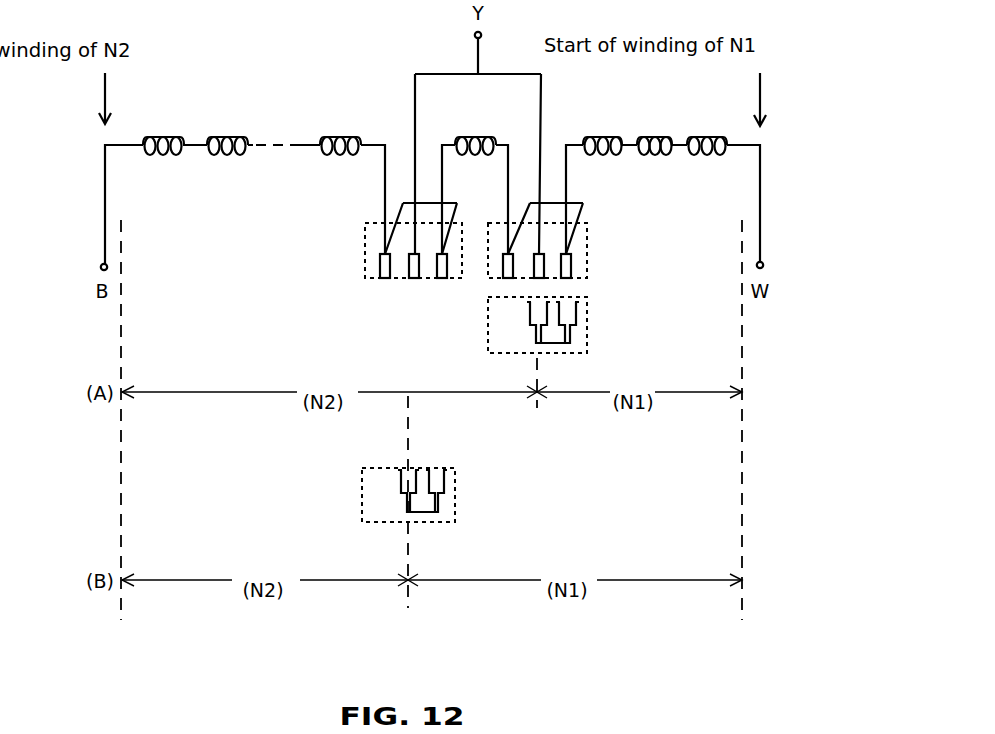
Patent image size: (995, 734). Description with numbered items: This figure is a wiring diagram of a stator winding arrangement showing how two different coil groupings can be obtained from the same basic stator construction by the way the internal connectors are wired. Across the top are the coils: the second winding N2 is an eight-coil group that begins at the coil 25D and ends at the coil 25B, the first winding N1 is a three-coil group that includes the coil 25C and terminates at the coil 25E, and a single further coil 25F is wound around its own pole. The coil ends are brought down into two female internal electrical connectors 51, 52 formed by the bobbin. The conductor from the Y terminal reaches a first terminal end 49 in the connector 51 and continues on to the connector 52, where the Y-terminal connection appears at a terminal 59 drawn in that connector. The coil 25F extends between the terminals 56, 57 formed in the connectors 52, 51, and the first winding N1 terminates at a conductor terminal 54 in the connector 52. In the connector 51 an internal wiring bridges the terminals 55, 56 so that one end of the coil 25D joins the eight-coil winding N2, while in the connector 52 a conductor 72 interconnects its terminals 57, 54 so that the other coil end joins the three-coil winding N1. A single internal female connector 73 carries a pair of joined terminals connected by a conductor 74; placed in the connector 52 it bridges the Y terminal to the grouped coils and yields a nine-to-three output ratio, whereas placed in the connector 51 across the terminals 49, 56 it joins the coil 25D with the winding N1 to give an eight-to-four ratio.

The coil 25B is at (168, 136).
The coil 25C is at (692, 136).
The coil 25D is at (350, 136).
The coil 25E is at (606, 136).
The coil 25F is at (478, 136).
The first terminal end 49 is at (408, 278).
The internal electrical connector 51 is at (365, 247).
The internal electrical connector 52 is at (593, 255).
The conductor terminal 54 is at (572, 278).
The terminal 55 is at (379, 277).
The terminal 56 is at (437, 282).
The terminal 57 is at (500, 277).
The terminal 59 is at (532, 278).
The conductor 72 is at (448, 205).
The internal female connector 73 is at (587, 338).
The conductor 74 is at (570, 343).